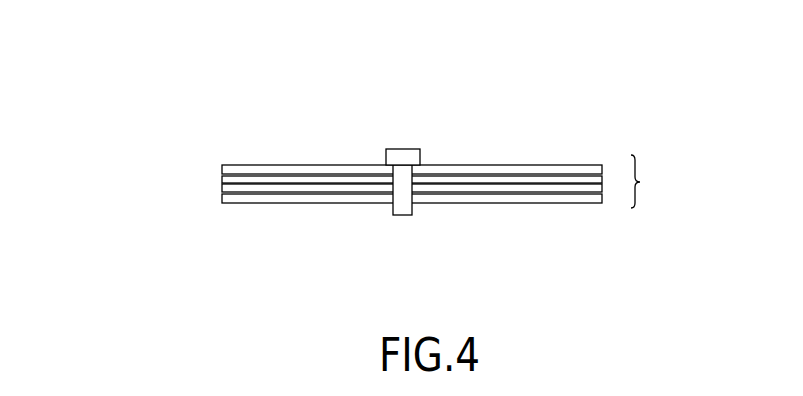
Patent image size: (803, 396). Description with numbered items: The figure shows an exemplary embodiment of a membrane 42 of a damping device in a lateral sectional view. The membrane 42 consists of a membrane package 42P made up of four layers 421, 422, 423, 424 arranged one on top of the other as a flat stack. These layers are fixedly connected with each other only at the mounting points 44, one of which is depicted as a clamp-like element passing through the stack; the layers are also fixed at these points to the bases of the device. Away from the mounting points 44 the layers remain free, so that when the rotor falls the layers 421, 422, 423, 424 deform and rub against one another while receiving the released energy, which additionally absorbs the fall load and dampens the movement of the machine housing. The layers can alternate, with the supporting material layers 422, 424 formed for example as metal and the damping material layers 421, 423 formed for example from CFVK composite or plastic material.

The membrane 42 is at (320, 135).
The metal layer 421 is at (222, 168).
The metal layer 422 is at (222, 178).
The metal layer 423 is at (222, 188).
The metal layer 424 is at (222, 198).
The mounting point 44 is at (403, 147).
The membrane package 42P is at (667, 181).